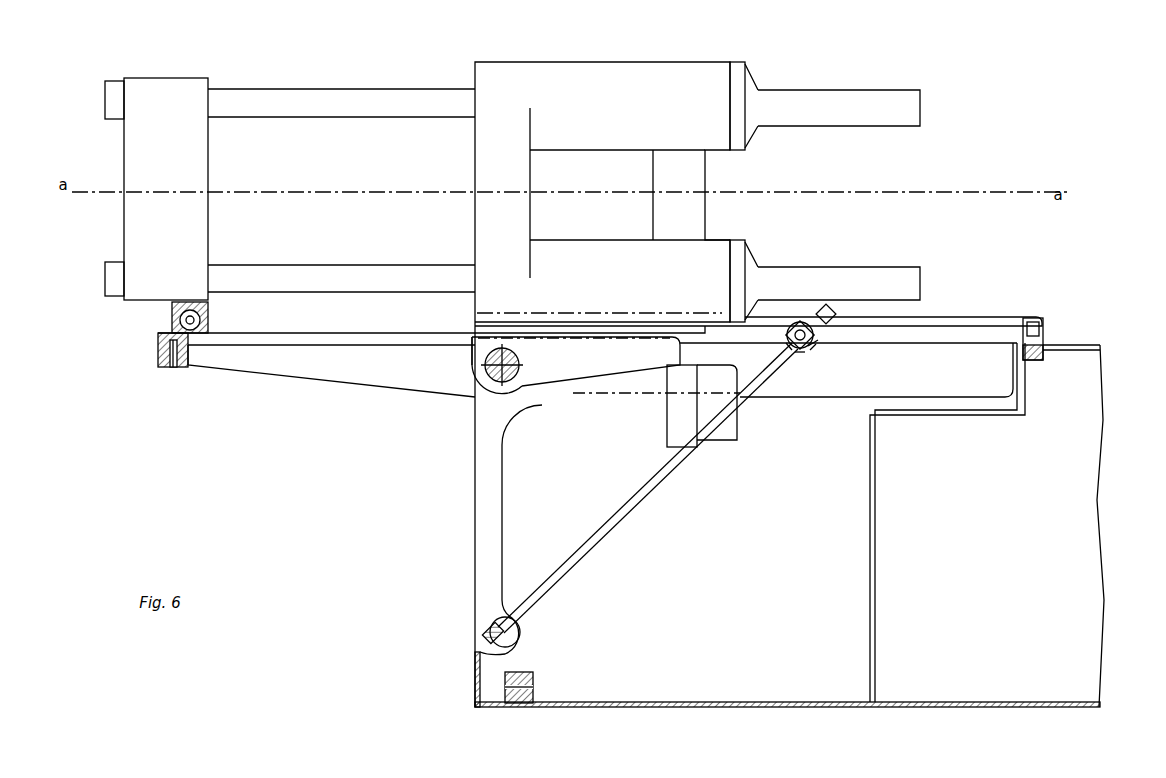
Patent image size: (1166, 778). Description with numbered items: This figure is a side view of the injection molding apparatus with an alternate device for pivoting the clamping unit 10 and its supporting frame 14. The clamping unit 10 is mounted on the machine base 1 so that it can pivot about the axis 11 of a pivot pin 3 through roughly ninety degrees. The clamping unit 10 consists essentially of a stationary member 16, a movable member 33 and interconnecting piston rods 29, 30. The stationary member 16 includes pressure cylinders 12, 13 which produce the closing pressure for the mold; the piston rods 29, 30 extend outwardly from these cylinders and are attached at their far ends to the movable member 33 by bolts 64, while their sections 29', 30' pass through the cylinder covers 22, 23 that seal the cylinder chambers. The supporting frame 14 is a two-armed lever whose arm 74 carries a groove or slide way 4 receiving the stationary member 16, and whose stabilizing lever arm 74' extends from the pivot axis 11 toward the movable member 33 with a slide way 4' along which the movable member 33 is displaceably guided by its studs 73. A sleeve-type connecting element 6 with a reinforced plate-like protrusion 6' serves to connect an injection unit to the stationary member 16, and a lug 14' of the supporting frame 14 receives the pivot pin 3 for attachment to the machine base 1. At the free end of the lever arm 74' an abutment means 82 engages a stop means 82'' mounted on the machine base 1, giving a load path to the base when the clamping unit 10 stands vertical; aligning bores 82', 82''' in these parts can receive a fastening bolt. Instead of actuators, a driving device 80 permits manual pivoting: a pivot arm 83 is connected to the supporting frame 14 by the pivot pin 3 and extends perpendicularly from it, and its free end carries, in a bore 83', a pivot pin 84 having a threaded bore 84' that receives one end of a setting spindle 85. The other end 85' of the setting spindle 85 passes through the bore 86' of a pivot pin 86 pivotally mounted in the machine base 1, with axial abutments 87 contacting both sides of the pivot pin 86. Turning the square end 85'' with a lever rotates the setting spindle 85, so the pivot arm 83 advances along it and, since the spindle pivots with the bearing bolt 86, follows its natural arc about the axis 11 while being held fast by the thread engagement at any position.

The machine base 1 is at (876, 505).
The pivot pin 3 is at (482, 384).
The groove or slide way or guide 4 is at (758, 268).
The groove or slide way or guide 4' is at (431, 381).
The sleeve-type connecting element 6 is at (562, 434).
The plate-like protrusion 6' is at (583, 416).
The clamping unit 10 is at (598, 57).
The axis 11 is at (517, 370).
The pressure cylinder 12 is at (668, 62).
The pressure cylinder 13 is at (712, 239).
The supporting frame 14 is at (331, 391).
The lug 14' is at (446, 338).
The stationary member 16 is at (474, 157).
The cylinder cover 22 is at (738, 80).
The cylinder cover 23 is at (741, 258).
The piston rod 29 is at (341, 71).
The piston rod section 29' is at (839, 78).
The piston rod 30 is at (341, 351).
The piston rod section 30' is at (839, 255).
The movable member 33 is at (185, 135).
The bolt 64 is at (113, 98).
The stud 73 is at (174, 318).
The arm 74 is at (848, 286).
The lever arm 74' is at (331, 391).
The driving device 80 is at (1045, 333).
The abutment means 82 is at (109, 350).
The aligning bore 82' is at (171, 373).
The stop means 82'' is at (543, 687).
The aligning bore 82''' is at (478, 690).
The pivot arm 83 is at (761, 514).
The bore 83' is at (507, 635).
The pivot pin 84 is at (462, 617).
The threaded bore 84' is at (533, 632).
The setting spindle 85 is at (648, 488).
The spindle end 85' is at (799, 413).
The square end 85'' is at (850, 267).
The pivot pin 86 is at (813, 280).
The bore 86' is at (839, 360).
The axial abutment 87 is at (789, 352).